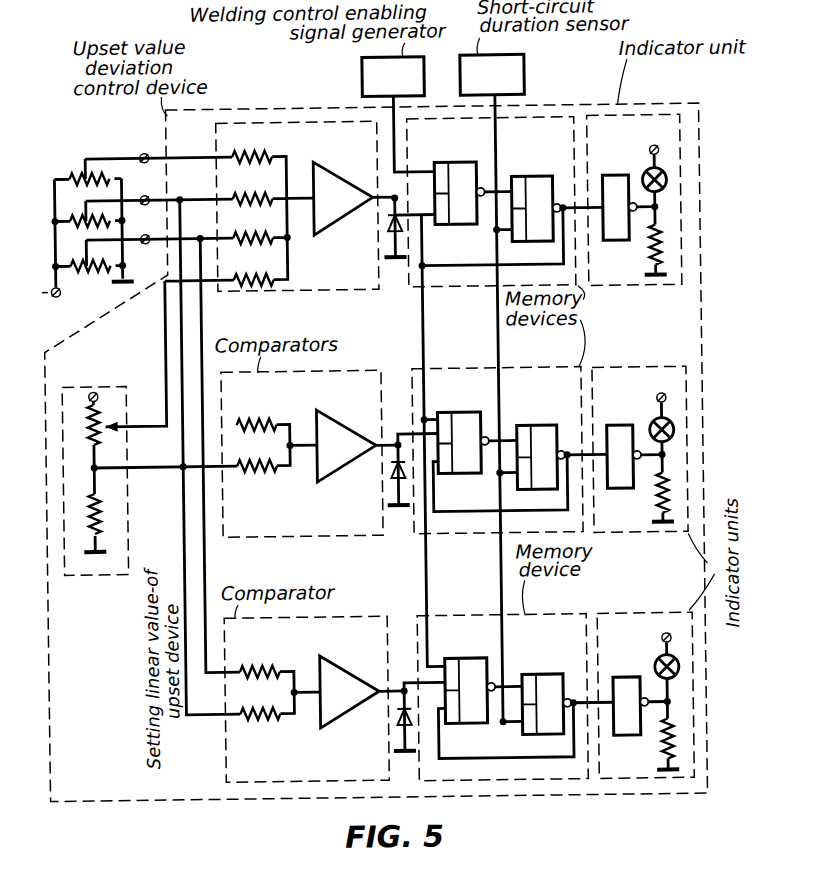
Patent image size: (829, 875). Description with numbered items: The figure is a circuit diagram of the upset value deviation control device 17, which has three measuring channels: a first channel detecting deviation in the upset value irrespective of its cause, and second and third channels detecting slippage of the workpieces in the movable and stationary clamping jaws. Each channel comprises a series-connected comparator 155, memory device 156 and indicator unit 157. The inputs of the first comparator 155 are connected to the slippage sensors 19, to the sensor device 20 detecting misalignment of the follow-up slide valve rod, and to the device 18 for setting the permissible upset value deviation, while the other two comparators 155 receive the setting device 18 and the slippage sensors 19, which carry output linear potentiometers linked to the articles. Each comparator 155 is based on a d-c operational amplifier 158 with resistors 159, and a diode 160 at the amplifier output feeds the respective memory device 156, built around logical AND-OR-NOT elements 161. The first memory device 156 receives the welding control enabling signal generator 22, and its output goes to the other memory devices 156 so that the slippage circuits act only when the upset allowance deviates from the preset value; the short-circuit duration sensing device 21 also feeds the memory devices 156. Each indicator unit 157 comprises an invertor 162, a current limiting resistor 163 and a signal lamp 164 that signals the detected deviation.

The upset value deviation control device 17 is at (229, 104).
The setting device for linear upset value 18 is at (86, 578).
The slippage sensor 19 is at (80, 262).
The misalignment sensor device 20 is at (82, 173).
The short-circuit duration sensing device 21 is at (496, 388).
The welding control enabling signal generator 22 is at (398, 115).
The comparator 155 is at (346, 295).
The memory device 156 is at (559, 106).
The indicator unit 157 is at (641, 106).
The d-c operational amplifier 158 is at (336, 208).
The resistor 159 is at (260, 197).
The diode 160 is at (410, 228).
The logical AND-OR-NOT element 161 is at (540, 178).
The invertor 162 is at (619, 243).
The current limiting resistor 163 is at (668, 246).
The signal lamp 164 is at (669, 179).